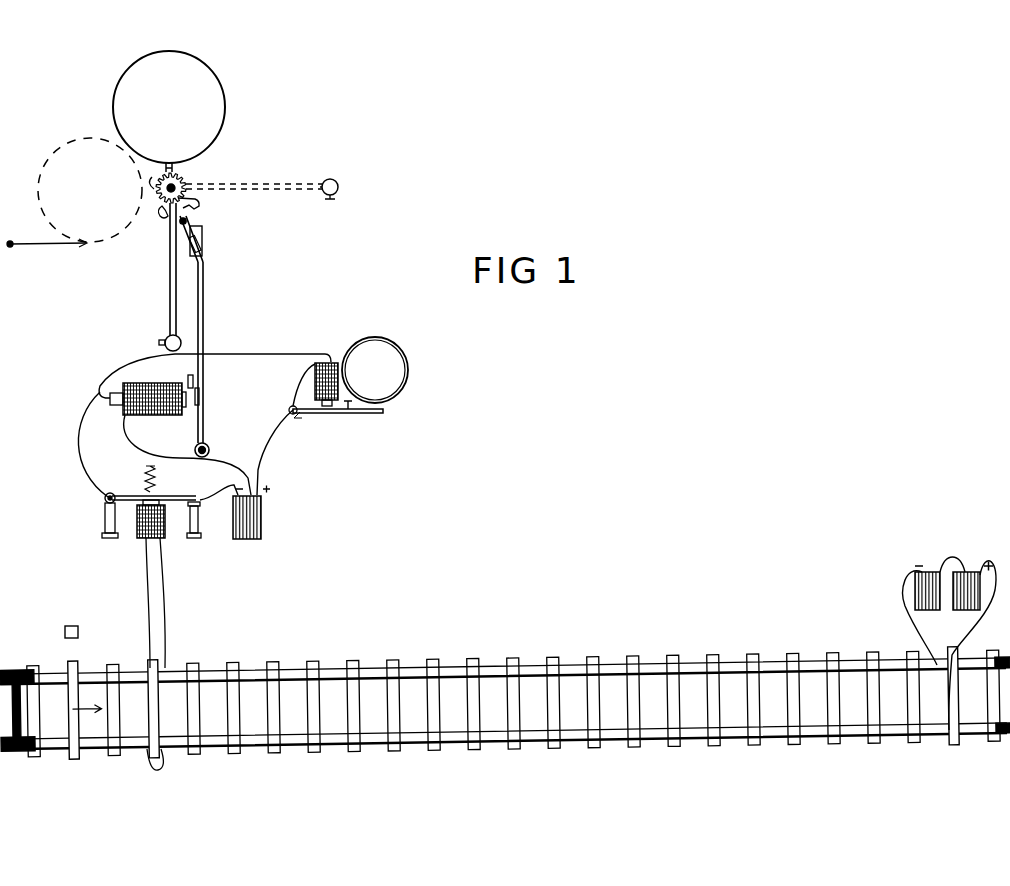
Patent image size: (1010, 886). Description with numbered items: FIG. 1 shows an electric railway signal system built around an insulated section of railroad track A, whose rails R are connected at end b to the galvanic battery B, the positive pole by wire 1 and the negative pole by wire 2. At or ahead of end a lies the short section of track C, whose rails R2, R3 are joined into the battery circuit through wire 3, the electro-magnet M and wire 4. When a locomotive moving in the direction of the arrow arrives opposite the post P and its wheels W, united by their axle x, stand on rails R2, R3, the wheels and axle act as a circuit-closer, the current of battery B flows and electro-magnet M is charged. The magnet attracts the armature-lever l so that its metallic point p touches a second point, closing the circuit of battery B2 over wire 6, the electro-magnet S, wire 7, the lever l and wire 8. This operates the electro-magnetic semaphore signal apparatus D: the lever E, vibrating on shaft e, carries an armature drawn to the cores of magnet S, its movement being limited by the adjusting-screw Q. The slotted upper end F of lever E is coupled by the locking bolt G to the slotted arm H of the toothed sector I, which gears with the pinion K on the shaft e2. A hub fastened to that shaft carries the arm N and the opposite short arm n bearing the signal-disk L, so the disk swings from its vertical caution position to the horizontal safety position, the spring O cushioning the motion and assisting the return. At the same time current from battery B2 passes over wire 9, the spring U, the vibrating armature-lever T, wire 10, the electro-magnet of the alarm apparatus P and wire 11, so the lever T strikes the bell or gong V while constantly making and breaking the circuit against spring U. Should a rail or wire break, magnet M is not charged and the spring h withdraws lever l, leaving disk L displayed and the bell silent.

The signal-disk L is at (176, 107).
The pointer O is at (47, 252).
The shaft e2 is at (176, 185).
The pinion K is at (162, 172).
The short arm n is at (146, 187).
The toothed sector I is at (158, 215).
The arm N is at (240, 260).
The arm of sector H is at (188, 239).
The upper end of lever F is at (201, 241).
The locking bolt G is at (189, 243).
The lever E is at (207, 352).
The shaft e is at (208, 450).
The electro-magnetic semaphore signal apparatus D is at (114, 331).
The adjusting-screw Q is at (181, 383).
The electro-magnet S is at (148, 412).
The wire 11 is at (215, 368).
The wire 7 is at (86, 444).
The wire 6 is at (187, 599).
The wire 8 is at (219, 491).
The wire 9 is at (279, 452).
The galvanic battery B2 is at (260, 513).
The armature-lever l is at (149, 510).
The metallic point p is at (197, 512).
The spring h is at (155, 479).
The electro-magnet M is at (141, 519).
The wire 4 is at (149, 603).
The wire 3 is at (168, 603).
The electro-magnetic alarm-bell apparatus P is at (324, 327).
The wire 10 is at (297, 385).
The spring U is at (327, 411).
The armature-lever T is at (336, 413).
The bell or gong V is at (375, 370).
The rails R is at (503, 659).
The insulated section of railroad-track A is at (513, 703).
The insulated joint s is at (513, 703).
The rail R2 is at (129, 658).
The rail R3 is at (130, 759).
The section of track C is at (103, 710).
The end of section a is at (170, 709).
The wheels W is at (505, 693).
The axle x is at (22, 710).
The galvanic battery B is at (954, 569).
The wire 2 is at (920, 634).
The end of section b is at (968, 645).
The wire 1 is at (998, 598).